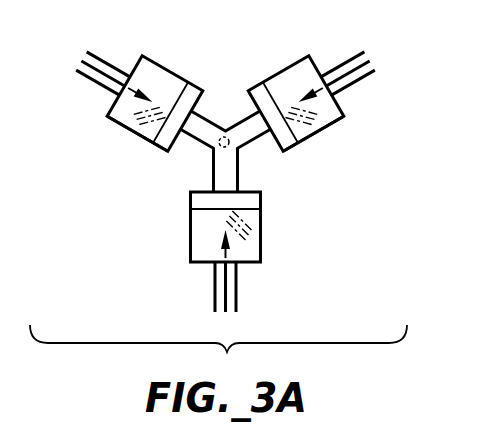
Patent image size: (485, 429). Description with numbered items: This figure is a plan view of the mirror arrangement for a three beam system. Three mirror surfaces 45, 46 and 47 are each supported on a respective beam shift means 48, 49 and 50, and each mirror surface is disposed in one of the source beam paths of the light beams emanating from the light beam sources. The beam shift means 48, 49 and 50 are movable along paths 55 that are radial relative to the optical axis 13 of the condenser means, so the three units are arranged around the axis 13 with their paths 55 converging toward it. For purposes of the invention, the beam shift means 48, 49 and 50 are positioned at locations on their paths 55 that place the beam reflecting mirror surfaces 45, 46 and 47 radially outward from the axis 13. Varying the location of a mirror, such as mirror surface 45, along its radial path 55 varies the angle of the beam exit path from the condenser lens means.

The optical axis 13 is at (225, 137).
The mirror surface 45 is at (157, 80).
The mirror surface 46 is at (275, 85).
The mirror surface 47 is at (205, 233).
The beam shift means 48 is at (140, 135).
The beam shift means 49 is at (262, 217).
The beam shift means 50 is at (320, 132).
The paths 55 is at (90, 83).